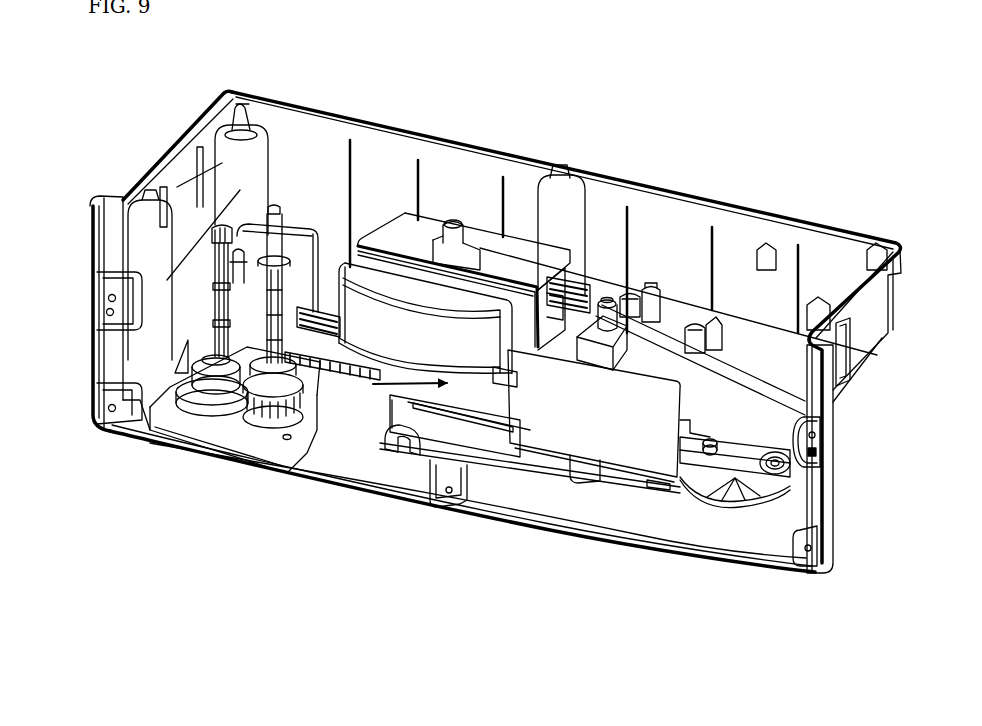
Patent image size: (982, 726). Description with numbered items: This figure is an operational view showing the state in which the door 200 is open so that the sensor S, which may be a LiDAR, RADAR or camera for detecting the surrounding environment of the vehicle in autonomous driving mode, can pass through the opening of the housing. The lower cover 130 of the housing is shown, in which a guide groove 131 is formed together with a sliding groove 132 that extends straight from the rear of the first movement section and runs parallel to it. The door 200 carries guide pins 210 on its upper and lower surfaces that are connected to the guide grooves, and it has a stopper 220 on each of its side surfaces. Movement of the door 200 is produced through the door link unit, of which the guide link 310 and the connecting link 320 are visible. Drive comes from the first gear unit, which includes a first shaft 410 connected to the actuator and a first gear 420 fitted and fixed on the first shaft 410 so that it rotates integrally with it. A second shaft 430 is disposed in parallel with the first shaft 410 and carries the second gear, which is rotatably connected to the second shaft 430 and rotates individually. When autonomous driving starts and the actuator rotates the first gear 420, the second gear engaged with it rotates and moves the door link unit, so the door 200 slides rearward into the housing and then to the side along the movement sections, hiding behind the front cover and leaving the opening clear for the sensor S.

The lower cover 130 is at (830, 250).
The guide groove 131 is at (490, 453).
The sliding groove 132 is at (433, 413).
The door 200 is at (592, 443).
The guide pin 210 is at (607, 300).
The stopper 220 is at (697, 480).
The guide link 310 is at (737, 497).
The connecting link 320 is at (814, 452).
The first shaft 410 is at (210, 287).
The first gear 420 is at (170, 405).
The second shaft 430 is at (208, 337).
The sensor S is at (383, 370).